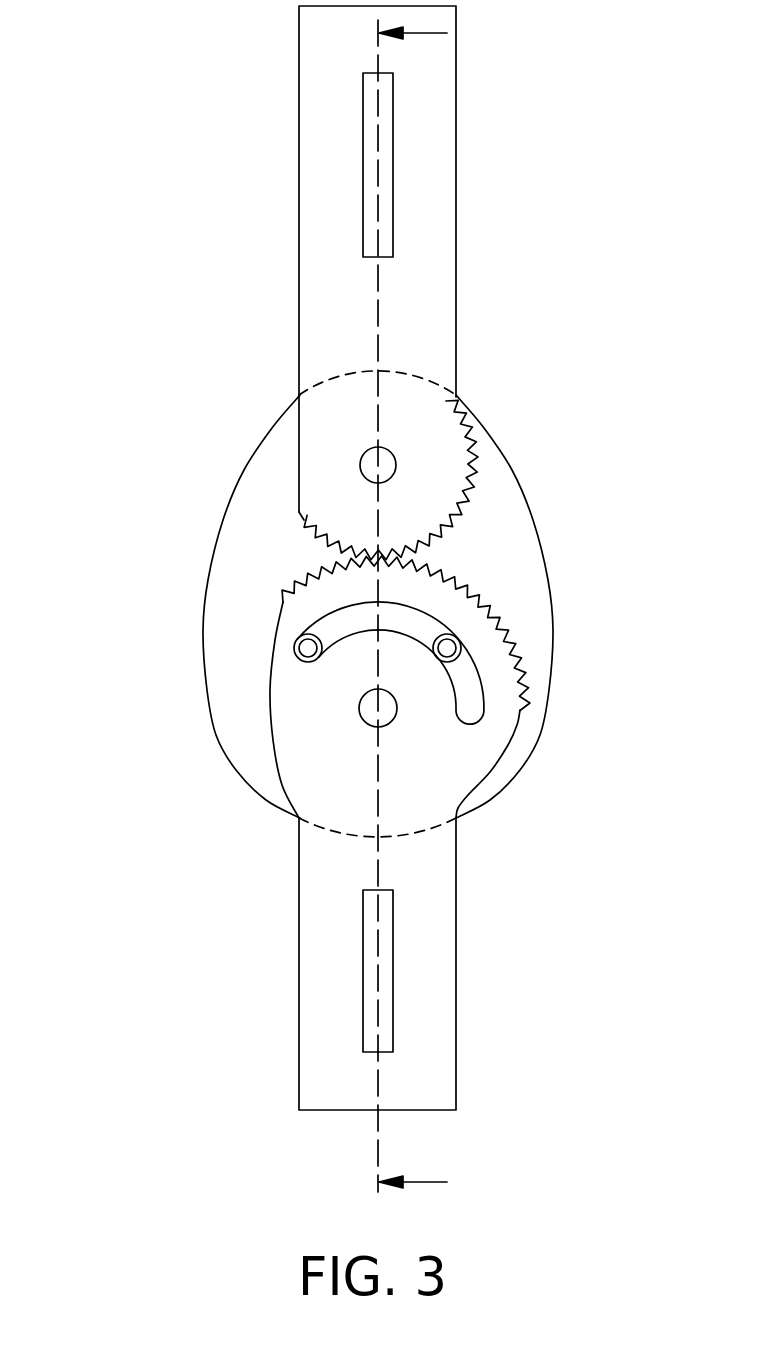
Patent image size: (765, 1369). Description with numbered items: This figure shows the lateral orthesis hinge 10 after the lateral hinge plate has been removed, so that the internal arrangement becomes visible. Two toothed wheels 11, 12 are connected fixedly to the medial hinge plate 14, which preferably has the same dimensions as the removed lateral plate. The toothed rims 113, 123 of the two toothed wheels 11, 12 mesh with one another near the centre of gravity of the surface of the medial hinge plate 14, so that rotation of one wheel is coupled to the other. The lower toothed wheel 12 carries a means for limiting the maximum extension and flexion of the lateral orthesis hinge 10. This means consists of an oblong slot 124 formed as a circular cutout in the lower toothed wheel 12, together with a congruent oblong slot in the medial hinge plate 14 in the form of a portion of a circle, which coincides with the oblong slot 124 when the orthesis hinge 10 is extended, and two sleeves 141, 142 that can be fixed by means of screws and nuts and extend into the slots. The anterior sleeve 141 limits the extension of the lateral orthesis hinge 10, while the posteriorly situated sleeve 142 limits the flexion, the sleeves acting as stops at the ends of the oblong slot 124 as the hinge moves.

The lateral orthesis hinge 10 is at (348, 599).
The toothed wheel 11 is at (335, 275).
The lower toothed wheel 12 is at (357, 870).
The medial hinge plate 14 is at (248, 706).
The toothed rim 113 is at (383, 520).
The toothed rim 123 is at (383, 585).
The oblong slot 124 is at (470, 707).
The anterior sleeve 141 is at (318, 648).
The posterior sleeve 142 is at (447, 648).